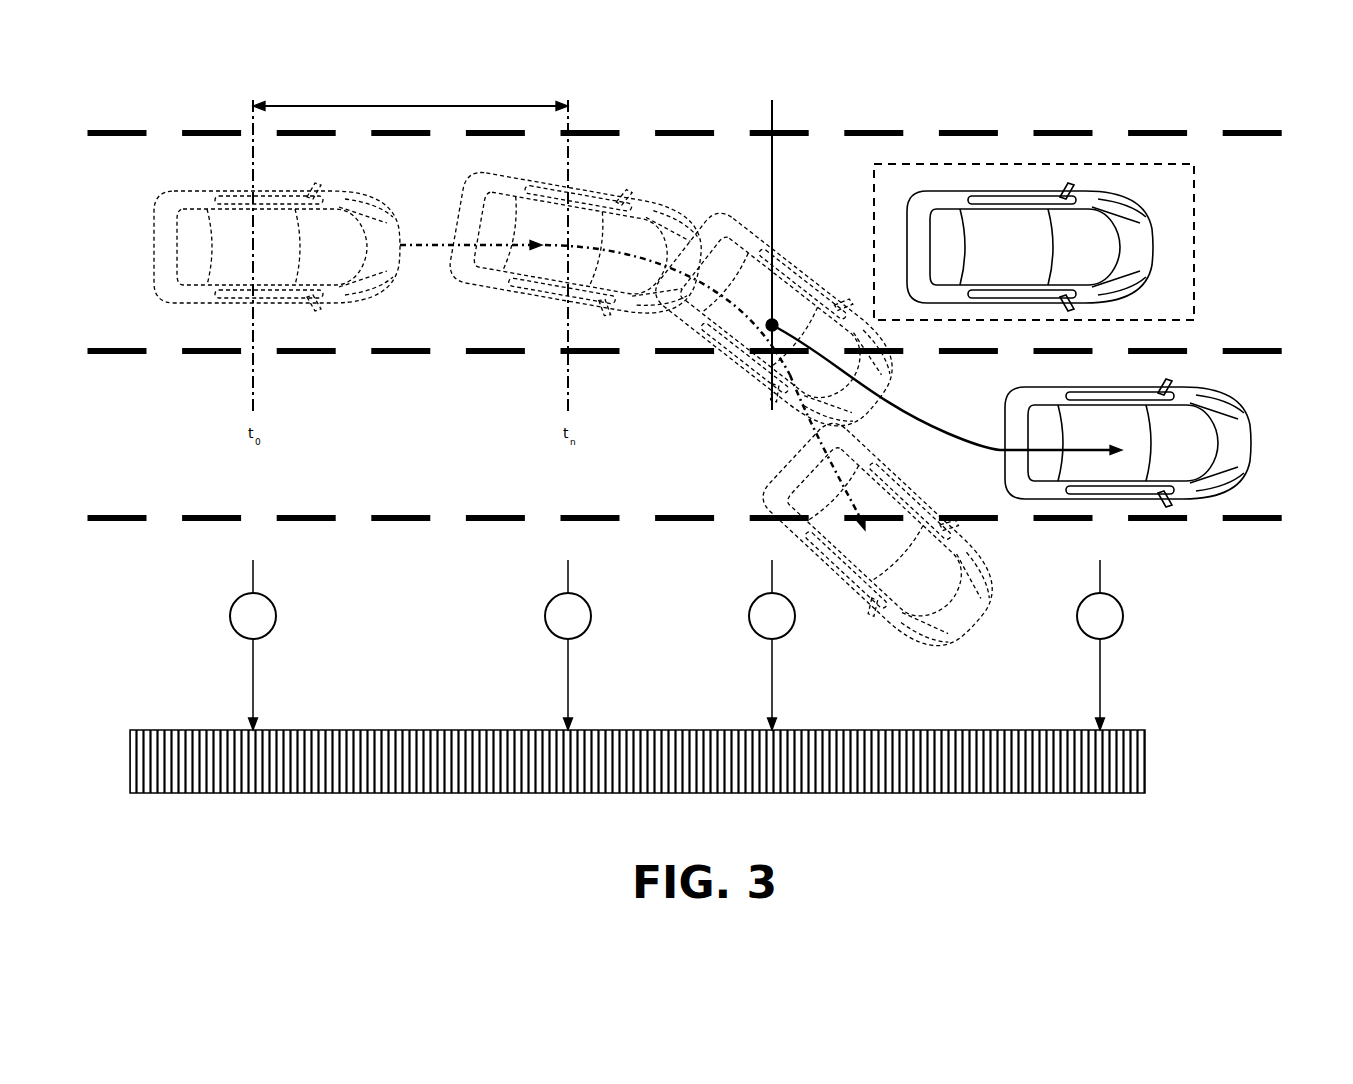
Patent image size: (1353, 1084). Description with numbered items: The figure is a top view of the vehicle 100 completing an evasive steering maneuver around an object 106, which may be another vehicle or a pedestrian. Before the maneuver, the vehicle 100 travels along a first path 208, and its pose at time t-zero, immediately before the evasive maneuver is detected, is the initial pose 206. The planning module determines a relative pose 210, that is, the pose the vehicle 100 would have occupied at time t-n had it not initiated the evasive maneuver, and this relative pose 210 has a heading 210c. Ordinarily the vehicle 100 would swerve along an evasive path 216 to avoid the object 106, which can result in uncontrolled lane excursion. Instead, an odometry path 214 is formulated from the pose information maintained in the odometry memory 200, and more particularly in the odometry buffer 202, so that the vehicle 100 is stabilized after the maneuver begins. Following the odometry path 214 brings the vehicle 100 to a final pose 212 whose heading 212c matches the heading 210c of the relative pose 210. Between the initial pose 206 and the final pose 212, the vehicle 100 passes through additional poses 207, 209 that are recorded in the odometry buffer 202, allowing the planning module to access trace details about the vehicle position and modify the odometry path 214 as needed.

The vehicle 100 is at (350, 182).
The object 106 is at (1150, 194).
The odometry memory 200 is at (525, 852).
The odometry buffer 202 is at (428, 820).
The initial pose 206 is at (267, 594).
The additional pose 207 is at (582, 594).
The first path 208 is at (427, 243).
The additional pose 209 is at (768, 594).
The relative pose 210 is at (1105, 644).
The heading of the relative pose 210c is at (1105, 644).
The final pose 212 is at (1139, 644).
The heading of the final pose 212c is at (1112, 594).
The odometry path 214 is at (908, 410).
The evasive path 216 is at (812, 432).